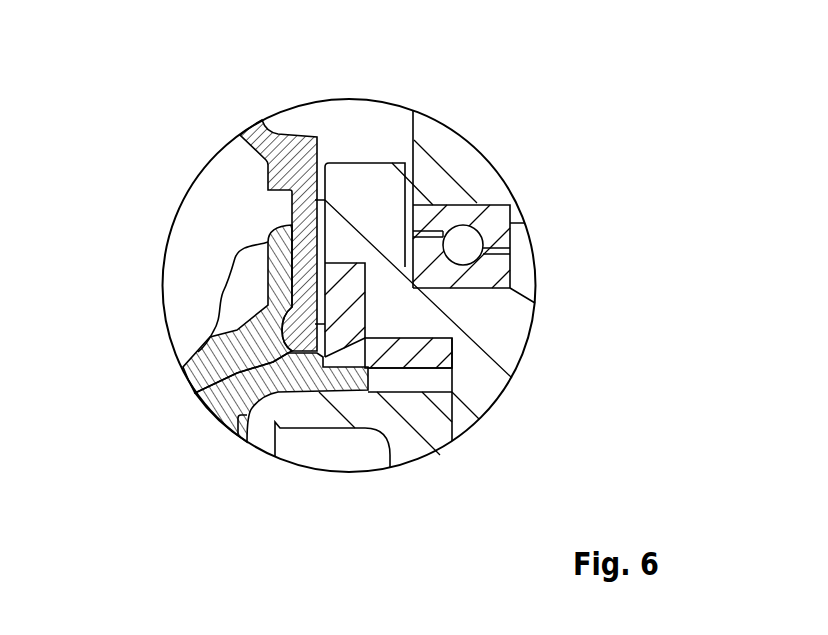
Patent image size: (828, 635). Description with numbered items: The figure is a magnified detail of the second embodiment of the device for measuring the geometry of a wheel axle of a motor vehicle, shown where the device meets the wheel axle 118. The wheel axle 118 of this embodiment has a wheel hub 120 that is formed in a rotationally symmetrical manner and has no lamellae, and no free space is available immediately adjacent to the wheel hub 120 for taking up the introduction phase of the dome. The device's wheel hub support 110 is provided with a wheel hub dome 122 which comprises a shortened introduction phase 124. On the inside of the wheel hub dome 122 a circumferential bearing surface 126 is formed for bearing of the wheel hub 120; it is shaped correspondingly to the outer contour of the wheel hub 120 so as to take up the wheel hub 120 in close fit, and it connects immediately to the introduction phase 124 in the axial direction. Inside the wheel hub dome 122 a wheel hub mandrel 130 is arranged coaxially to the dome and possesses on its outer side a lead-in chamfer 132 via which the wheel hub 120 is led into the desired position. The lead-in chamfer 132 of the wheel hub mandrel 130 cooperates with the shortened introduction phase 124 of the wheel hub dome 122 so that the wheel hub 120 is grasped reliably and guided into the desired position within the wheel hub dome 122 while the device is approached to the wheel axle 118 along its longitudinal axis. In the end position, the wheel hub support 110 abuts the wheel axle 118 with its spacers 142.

The wheel hub support 110 is at (377, 182).
The wheel axle 118 is at (225, 172).
The wheel hub 120 is at (225, 405).
The wheel hub dome 122 is at (433, 353).
The introduction phase 124 is at (197, 393).
The bearing surface 126 is at (393, 370).
The wheel hub mandrel 130 is at (430, 440).
The lead-in chamfer 132 is at (298, 407).
The spacers 142 is at (320, 200).